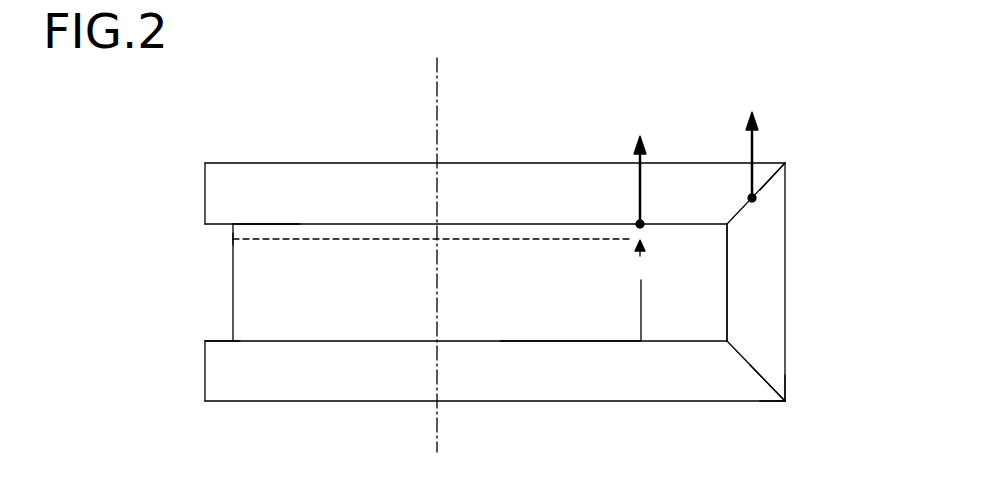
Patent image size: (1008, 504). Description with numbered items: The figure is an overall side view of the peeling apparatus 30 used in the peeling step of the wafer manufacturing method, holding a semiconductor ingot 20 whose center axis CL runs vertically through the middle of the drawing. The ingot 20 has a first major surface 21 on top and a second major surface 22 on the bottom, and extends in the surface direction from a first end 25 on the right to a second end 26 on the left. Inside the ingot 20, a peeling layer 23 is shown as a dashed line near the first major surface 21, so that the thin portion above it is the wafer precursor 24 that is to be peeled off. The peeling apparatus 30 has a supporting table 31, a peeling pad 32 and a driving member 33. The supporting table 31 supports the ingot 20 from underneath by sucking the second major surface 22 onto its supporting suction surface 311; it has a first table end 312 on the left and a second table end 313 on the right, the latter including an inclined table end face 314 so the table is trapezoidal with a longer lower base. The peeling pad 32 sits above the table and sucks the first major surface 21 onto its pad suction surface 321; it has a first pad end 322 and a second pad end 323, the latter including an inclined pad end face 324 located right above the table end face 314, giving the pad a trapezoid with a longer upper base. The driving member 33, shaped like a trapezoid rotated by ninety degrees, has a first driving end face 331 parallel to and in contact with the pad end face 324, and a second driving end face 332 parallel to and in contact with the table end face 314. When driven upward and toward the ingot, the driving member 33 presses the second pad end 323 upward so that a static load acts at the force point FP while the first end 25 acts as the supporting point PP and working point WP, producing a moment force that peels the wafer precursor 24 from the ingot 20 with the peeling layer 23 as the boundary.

The ingot 20 is at (385, 315).
The first major surface 21 is at (253, 224).
The second major surface 22 is at (557, 341).
The peeling layer 23 is at (240, 240).
The wafer precursor 24 is at (243, 238).
The first end 25 is at (640, 224).
The second end 26 is at (233, 341).
The peeling apparatus 30 is at (497, 274).
The supporting table 31 is at (497, 390).
The supporting suction surface 311 is at (222, 341).
The first table end 312 is at (214, 390).
The second table end 313 is at (762, 395).
The table end face 314 is at (765, 378).
The peeling pad 32 is at (536, 218).
The pad suction surface 321 is at (727, 250).
The first pad end 322 is at (214, 175).
The second pad end 323 is at (765, 170).
The pad end face 324 is at (770, 180).
The driving member 33 is at (774, 279).
The first driving end face 331 is at (727, 224).
The second driving end face 332 is at (738, 357).
The center axis CL is at (437, 75).
The force point FP is at (752, 198).
The supporting point PP is at (641, 260).
The working point WP is at (640, 224).